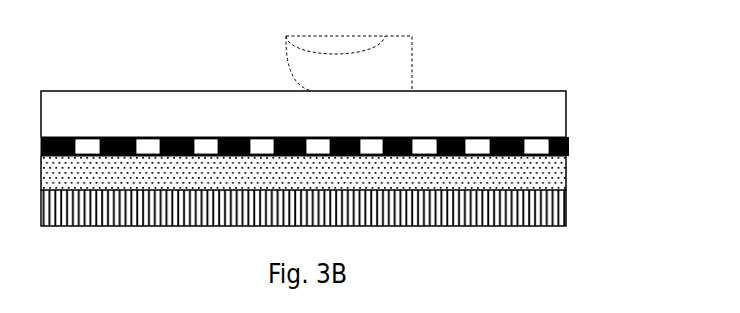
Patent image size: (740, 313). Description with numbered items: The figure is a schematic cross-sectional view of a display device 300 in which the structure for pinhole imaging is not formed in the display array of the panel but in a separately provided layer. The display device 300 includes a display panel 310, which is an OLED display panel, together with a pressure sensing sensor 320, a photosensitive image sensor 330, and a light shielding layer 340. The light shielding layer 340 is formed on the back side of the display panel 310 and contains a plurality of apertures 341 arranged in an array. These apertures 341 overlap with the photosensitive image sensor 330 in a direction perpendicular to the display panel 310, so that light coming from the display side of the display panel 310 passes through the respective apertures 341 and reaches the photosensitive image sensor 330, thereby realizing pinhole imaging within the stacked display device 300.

The display device 300 is at (538, 18).
The display panel 310 is at (557, 103).
The light shielding layer 340 is at (569, 137).
The apertures 341 is at (152, 145).
The pressure sensing sensor 320 is at (543, 177).
The photosensitive image sensor 330 is at (547, 216).